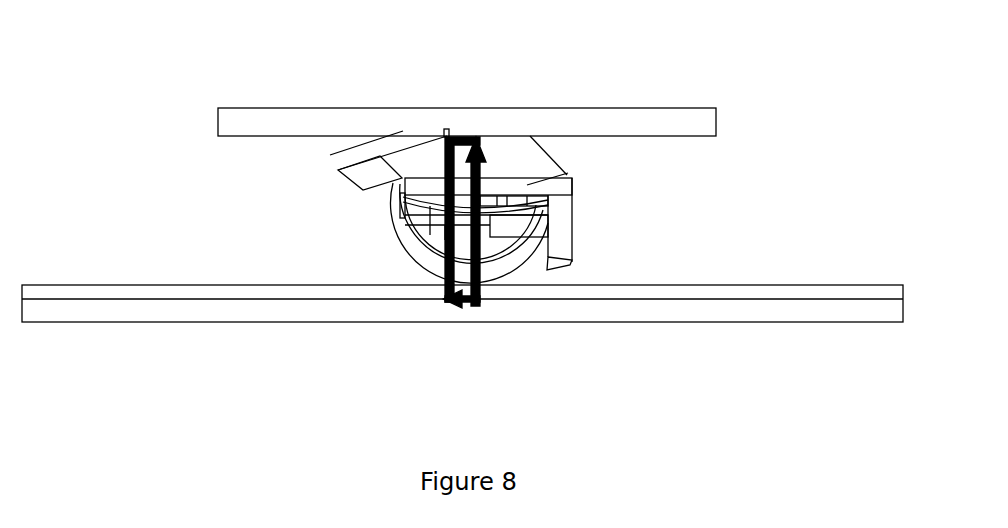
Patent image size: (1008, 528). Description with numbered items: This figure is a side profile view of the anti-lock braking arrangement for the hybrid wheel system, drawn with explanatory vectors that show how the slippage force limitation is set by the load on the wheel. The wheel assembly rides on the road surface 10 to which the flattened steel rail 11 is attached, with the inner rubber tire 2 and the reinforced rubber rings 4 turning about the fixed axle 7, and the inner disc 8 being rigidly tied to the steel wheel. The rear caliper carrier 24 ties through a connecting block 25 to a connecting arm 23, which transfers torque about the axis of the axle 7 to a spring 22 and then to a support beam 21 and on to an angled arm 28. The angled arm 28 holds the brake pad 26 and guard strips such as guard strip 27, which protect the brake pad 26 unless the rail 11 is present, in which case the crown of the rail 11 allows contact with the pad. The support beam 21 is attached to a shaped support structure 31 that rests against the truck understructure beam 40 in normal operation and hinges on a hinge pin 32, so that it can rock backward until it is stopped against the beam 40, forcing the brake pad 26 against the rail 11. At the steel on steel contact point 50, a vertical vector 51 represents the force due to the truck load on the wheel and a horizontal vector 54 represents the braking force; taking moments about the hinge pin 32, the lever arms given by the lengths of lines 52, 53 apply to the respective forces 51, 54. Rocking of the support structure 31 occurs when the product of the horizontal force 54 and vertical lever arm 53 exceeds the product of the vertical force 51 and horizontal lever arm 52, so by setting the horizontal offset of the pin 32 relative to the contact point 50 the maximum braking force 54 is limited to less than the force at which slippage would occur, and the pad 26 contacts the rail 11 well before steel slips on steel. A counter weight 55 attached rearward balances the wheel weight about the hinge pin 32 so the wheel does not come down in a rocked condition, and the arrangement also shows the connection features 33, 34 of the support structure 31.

The inner rubber tire 2 is at (402, 240).
The rubber rings 4 is at (410, 255).
The fixed axle 7 is at (496, 283).
The inner disc 8 is at (508, 283).
The road surface 10 is at (252, 300).
The flattened steel rail 11 is at (142, 292).
The support beam 21 is at (565, 170).
The spring 22 is at (530, 186).
The connecting arm 23 is at (405, 268).
The rear caliper carrier 24 is at (400, 194).
The connecting block 25 is at (397, 218).
The brake pad 26 is at (543, 270).
The guard strip 27 is at (565, 268).
The angled arm 28 is at (565, 237).
The shaped support structure 31 is at (508, 150).
The hinge pin 32 is at (442, 172).
The connecting strut 33 is at (488, 137).
The guide line 34 is at (440, 169).
The truck understructure beam 40 is at (628, 122).
The steel on steel contact point 50 is at (473, 305).
The vertical vector 51 is at (478, 135).
The horizontal lever arm 52 is at (457, 136).
The vertical lever arm 53 is at (445, 170).
The horizontal vector 54 is at (458, 303).
The counter weight 55 is at (370, 173).